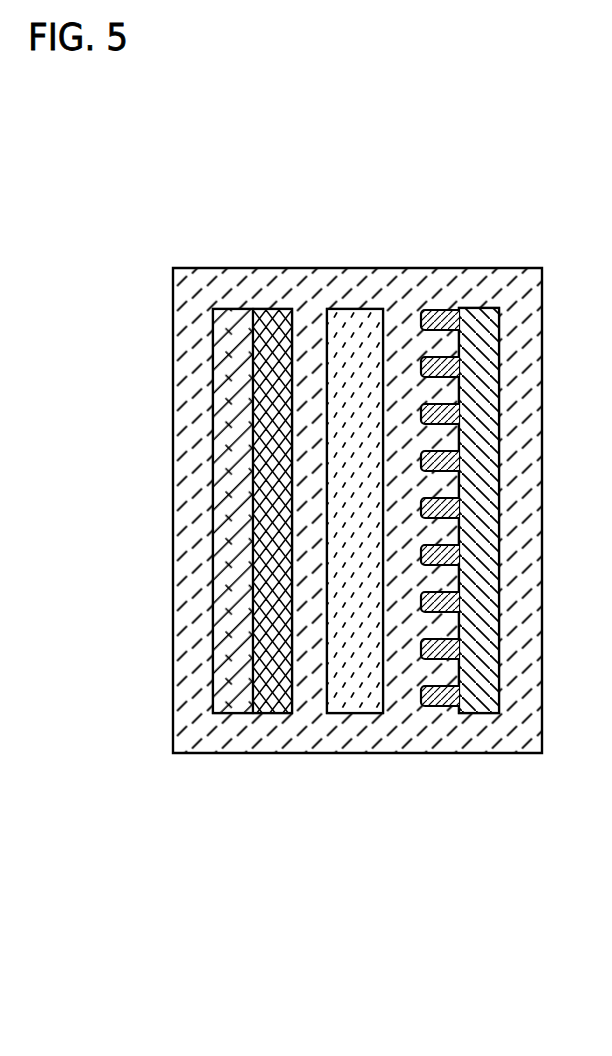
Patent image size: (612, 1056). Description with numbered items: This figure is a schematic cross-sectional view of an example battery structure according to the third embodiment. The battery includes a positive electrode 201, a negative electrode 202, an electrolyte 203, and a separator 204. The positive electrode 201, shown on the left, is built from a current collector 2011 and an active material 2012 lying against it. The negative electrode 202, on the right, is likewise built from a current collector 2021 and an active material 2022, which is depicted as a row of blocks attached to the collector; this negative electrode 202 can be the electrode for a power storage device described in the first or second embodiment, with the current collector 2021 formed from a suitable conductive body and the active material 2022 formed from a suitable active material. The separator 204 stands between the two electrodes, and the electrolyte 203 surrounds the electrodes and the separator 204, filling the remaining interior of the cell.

The positive electrode 201 is at (255, 610).
The current collector 2011 is at (228, 697).
The active material 2012 is at (270, 703).
The negative electrode 202 is at (466, 610).
The current collector 2021 is at (478, 700).
The active material 2022 is at (440, 704).
The electrolyte 203 is at (195, 279).
The separator 204 is at (355, 693).